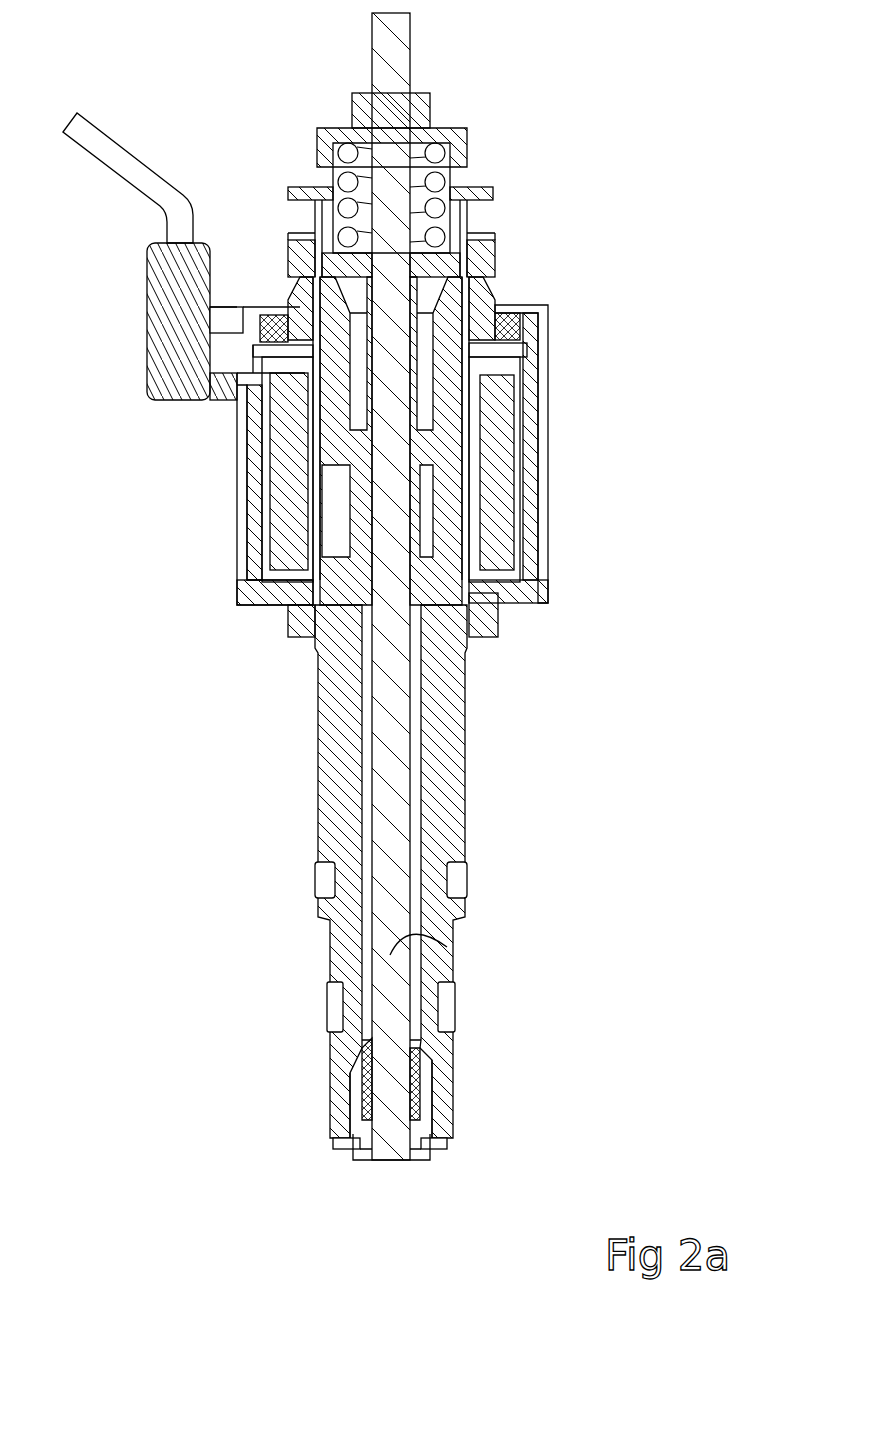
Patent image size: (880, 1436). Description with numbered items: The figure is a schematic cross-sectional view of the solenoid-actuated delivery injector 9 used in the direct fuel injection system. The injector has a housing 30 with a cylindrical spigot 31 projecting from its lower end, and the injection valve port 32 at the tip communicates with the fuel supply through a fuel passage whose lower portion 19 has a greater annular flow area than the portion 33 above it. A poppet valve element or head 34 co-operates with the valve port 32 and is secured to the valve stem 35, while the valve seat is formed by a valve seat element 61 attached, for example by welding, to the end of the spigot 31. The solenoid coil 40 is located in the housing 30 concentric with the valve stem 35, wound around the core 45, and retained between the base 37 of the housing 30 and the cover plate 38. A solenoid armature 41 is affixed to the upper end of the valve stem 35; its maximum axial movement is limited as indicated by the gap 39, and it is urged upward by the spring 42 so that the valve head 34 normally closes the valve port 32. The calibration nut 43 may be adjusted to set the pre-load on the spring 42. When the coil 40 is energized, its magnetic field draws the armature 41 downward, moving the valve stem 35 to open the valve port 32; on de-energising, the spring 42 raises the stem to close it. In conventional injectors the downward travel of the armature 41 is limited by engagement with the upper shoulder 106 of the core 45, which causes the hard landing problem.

The delivery injector 9 is at (497, 768).
The lower portion of fuel passage 19 is at (420, 1108).
The housing 30 is at (548, 548).
The cylindrical spigot 31 is at (317, 830).
The valve port 32 is at (333, 1172).
The upper portion of fuel passage 33 is at (417, 827).
The poppet valve element 34 is at (402, 1163).
The valve stem 35 is at (447, 947).
The base of housing 37 is at (503, 605).
The cover plate 38 is at (512, 305).
The gap 39 is at (350, 467).
The solenoid coil 40 is at (440, 466).
The solenoid armature 41 is at (330, 410).
The spring 42 is at (447, 182).
The calibration nut 43 is at (352, 88).
The core 45 is at (415, 494).
The valve seat element 61 is at (443, 1150).
The upper shoulder of core 106 is at (528, 420).